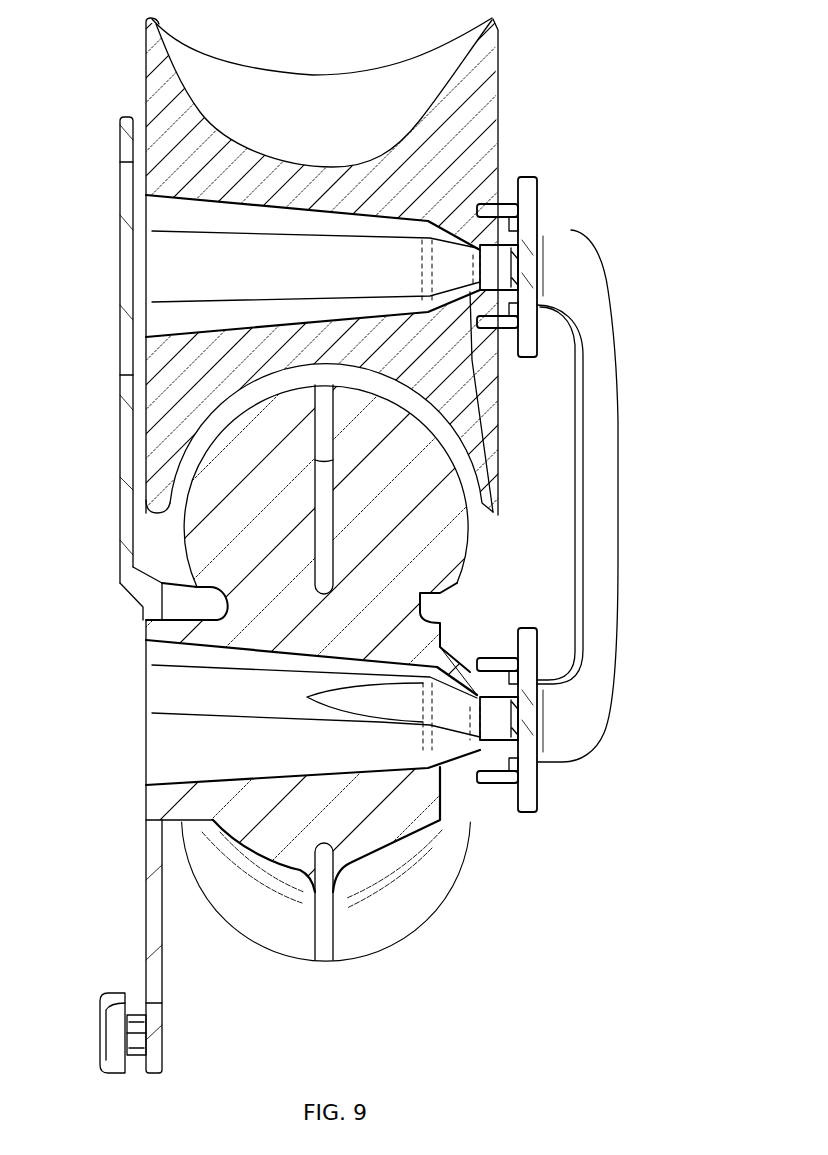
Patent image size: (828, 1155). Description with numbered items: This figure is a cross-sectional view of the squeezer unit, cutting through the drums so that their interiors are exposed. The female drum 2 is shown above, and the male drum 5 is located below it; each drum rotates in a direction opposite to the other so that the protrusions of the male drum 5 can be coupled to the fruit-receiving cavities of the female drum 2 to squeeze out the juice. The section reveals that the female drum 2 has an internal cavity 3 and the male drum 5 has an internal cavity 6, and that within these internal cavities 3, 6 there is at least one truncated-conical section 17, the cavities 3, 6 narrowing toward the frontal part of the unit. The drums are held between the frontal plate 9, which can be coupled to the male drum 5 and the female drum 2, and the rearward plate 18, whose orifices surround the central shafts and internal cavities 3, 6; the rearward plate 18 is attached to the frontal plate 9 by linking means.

The female drum 2 is at (163, 87).
The internal cavity 3 is at (160, 275).
The male drum 5 is at (415, 893).
The internal cavity 6 is at (170, 750).
The frontal plate 9 is at (605, 488).
The truncated-conical section 17 is at (192, 207).
The rearward plate 18 is at (123, 543).